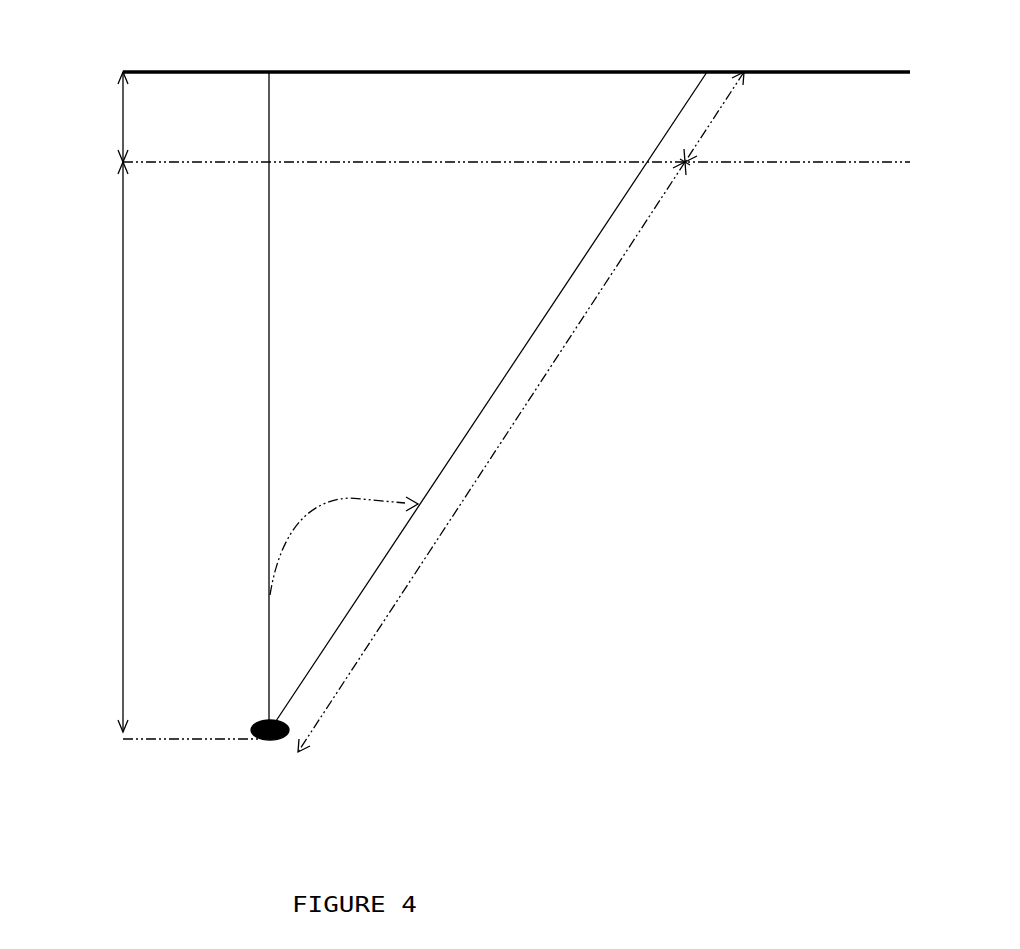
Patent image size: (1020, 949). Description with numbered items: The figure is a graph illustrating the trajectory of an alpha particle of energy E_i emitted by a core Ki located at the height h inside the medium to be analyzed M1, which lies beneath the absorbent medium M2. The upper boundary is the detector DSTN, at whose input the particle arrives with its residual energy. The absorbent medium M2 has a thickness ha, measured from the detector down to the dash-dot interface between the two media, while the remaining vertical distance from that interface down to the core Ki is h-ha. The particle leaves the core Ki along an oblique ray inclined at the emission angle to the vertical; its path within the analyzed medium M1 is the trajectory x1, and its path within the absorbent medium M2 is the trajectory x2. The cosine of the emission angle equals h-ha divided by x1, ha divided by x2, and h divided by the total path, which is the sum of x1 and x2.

The solid state nuclear track detector DSTN is at (578, 58).
The thickness of the absorbent medium ha is at (88, 117).
The depth of the core in the medium to be analyzed h-ha is at (146, 450).
The trajectory of the alpha particle in the absorbent medium x2 is at (712, 118).
The trajectory of the alpha particle in the analyzed medium x1 is at (492, 457).
The absorbent medium M2 is at (859, 124).
The medium to be analyzed M1 is at (859, 269).
The core emitting the alpha particle Ki is at (263, 758).